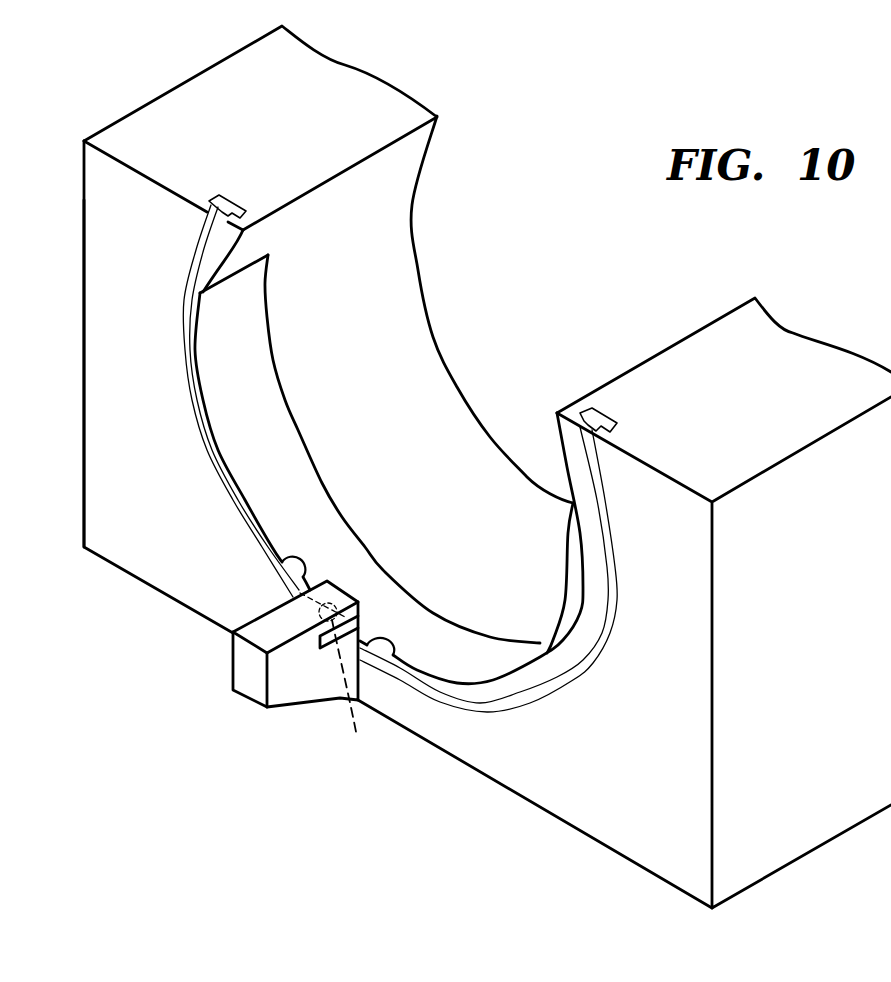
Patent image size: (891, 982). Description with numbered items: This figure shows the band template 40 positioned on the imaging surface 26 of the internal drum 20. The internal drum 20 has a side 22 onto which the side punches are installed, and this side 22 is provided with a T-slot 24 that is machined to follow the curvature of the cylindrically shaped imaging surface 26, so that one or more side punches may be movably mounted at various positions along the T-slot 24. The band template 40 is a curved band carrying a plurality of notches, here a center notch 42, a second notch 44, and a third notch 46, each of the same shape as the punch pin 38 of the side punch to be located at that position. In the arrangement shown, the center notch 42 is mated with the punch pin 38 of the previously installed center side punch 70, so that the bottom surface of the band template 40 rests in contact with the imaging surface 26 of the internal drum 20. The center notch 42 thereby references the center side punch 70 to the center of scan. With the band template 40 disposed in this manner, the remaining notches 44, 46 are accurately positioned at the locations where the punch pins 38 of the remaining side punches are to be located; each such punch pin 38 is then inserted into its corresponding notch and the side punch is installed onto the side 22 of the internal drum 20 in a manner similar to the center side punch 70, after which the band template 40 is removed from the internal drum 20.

The internal drum 20 is at (605, 802).
The side 22 is at (127, 330).
The T-slot 24 is at (188, 265).
The imaging surface 26 is at (367, 408).
The punch pin 38 is at (351, 692).
The band template 40 is at (258, 430).
The center notch 42 is at (362, 600).
The second notch 44 is at (300, 573).
The third notch 46 is at (390, 640).
The center side punch 70 is at (275, 683).